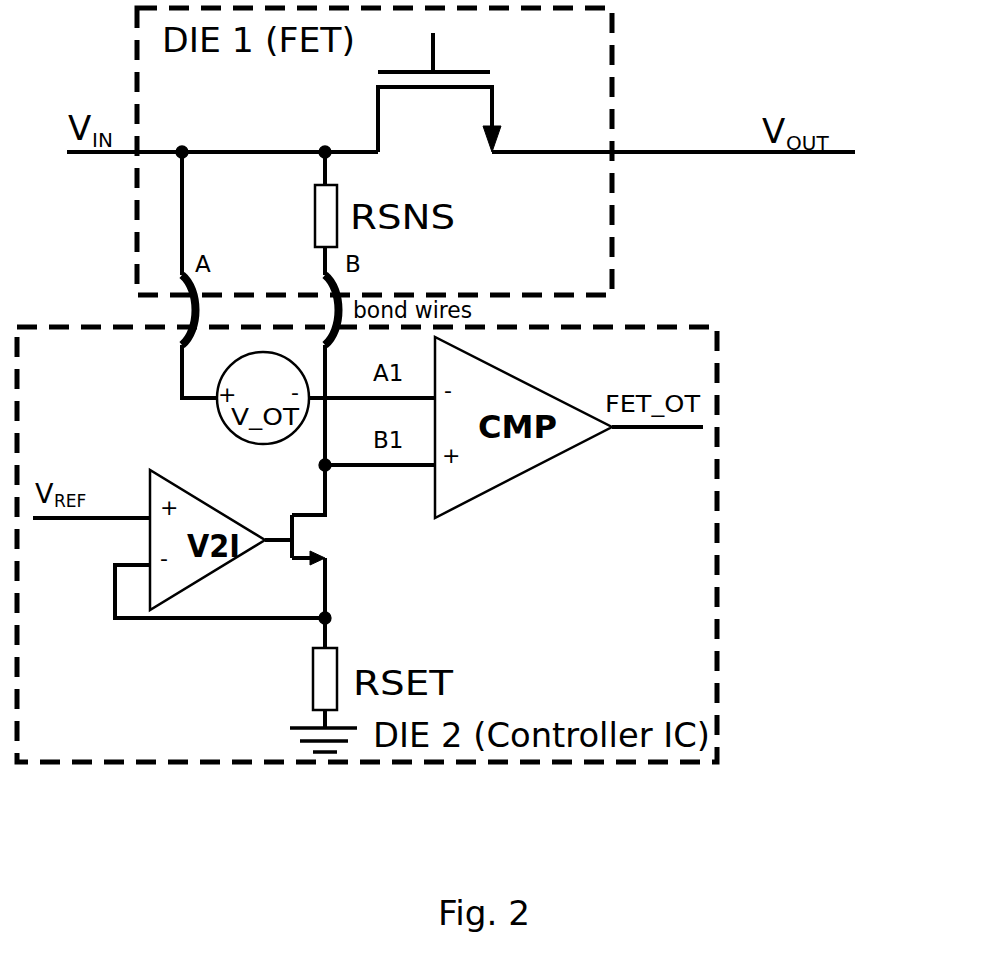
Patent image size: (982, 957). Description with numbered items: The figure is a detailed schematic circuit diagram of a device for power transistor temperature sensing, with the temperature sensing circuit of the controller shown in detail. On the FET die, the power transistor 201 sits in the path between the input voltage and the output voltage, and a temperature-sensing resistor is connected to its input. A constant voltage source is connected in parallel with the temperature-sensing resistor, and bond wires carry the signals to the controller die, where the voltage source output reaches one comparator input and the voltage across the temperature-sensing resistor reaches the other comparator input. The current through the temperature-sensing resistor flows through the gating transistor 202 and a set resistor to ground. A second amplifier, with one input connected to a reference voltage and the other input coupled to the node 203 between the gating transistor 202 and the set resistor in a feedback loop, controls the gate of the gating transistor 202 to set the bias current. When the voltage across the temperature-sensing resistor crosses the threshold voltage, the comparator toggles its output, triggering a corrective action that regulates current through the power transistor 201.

The power transistor 201 is at (492, 88).
The gating transistor 202 is at (325, 505).
The node 203 is at (333, 614).